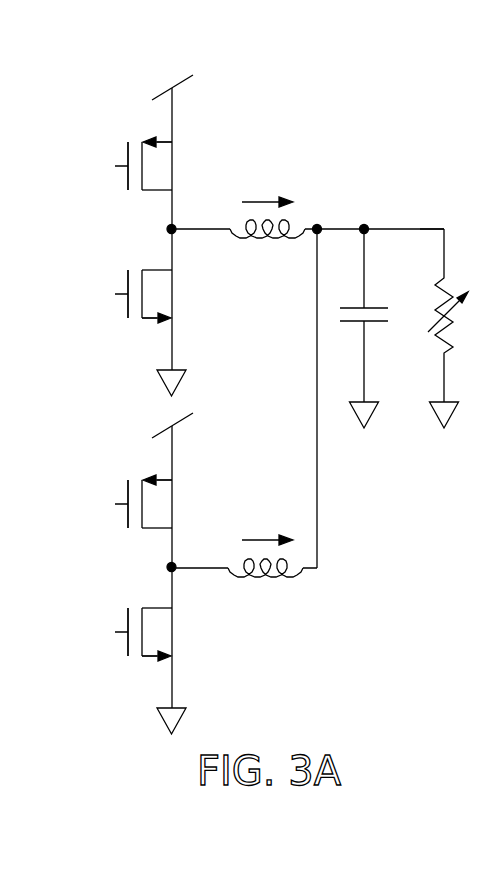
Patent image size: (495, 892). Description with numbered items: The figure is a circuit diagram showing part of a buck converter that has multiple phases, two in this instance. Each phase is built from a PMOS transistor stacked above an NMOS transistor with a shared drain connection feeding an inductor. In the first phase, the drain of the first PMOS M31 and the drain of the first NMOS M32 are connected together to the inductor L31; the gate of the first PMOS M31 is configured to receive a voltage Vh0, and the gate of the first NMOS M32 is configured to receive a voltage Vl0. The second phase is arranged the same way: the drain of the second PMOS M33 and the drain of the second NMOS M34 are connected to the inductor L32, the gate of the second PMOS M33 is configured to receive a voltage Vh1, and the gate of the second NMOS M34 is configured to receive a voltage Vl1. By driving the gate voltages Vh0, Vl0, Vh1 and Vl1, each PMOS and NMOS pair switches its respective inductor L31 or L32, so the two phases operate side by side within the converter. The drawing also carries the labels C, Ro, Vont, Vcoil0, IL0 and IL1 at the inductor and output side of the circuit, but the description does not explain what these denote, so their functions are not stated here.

The first PMOS M31 is at (161, 163).
The first NMOS M32 is at (161, 296).
The second PMOS M33 is at (161, 501).
The second NMOS M34 is at (161, 634).
The inductor L31 is at (267, 246).
The inductor L32 is at (265, 584).
The output capacitor C is at (364, 328).
The output load resistor Ro is at (436, 328).
The output voltage node Vont is at (446, 215).
The coil voltage node Vcoil0 is at (190, 258).
The first inductor current IL0 is at (267, 189).
The second inductor current IL1 is at (267, 527).
The voltage Vh0 is at (100, 166).
The voltage Vl0 is at (102, 294).
The voltage Vh1 is at (100, 504).
The voltage Vl1 is at (102, 632).